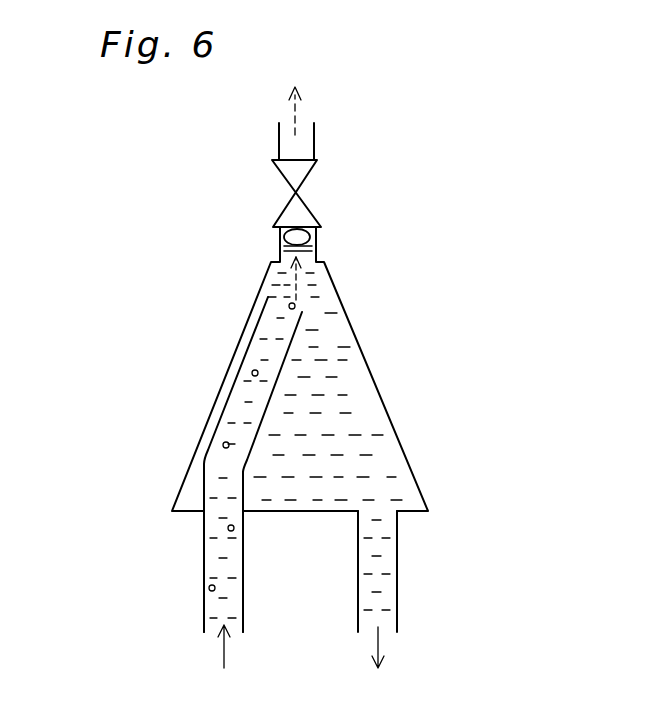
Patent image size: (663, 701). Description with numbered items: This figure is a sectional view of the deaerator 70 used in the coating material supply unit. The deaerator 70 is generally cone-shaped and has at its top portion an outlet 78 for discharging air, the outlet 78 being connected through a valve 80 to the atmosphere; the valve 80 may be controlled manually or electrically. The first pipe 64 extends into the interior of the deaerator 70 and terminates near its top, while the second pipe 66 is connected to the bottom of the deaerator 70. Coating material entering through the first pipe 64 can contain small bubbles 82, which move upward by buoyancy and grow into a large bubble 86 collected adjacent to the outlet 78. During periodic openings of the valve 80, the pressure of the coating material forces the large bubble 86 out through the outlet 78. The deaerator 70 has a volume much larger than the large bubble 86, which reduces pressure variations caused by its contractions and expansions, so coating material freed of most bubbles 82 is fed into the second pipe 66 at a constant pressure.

The first pipe 64 is at (203, 557).
The second pipe 66 is at (397, 572).
The deaerator 70 is at (224, 387).
The outlet 78 is at (316, 245).
The valve 80 is at (320, 168).
The small bubbles 82 is at (252, 370).
The large bubble 86 is at (278, 245).